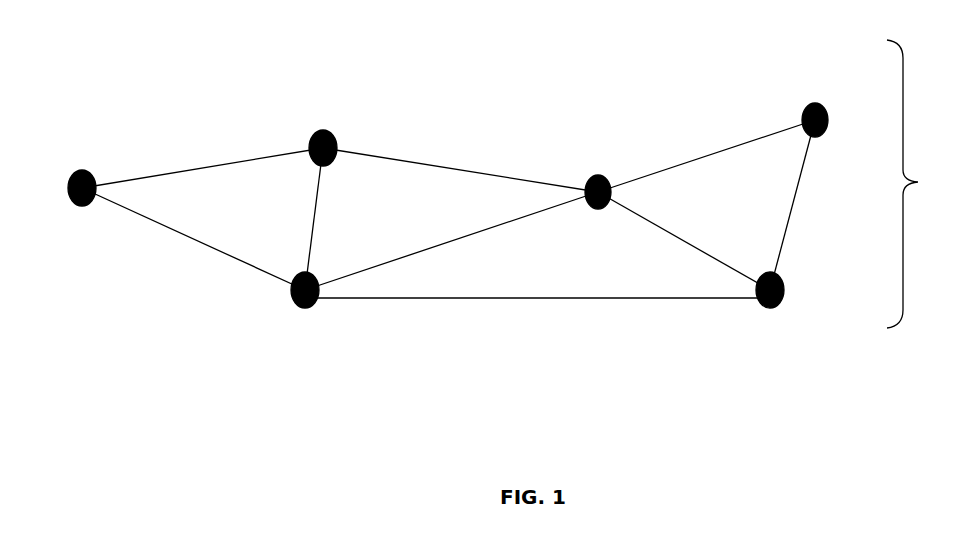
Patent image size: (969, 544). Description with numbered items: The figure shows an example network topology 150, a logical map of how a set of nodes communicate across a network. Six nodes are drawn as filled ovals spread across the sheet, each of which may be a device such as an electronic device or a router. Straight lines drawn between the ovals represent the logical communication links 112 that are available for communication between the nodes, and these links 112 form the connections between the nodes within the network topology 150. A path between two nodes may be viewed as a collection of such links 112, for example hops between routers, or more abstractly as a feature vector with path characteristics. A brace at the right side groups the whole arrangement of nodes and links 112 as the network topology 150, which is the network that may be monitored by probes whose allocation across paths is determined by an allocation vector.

The network topology 150 is at (503, 201).
The logical communication links 112 is at (214, 165).